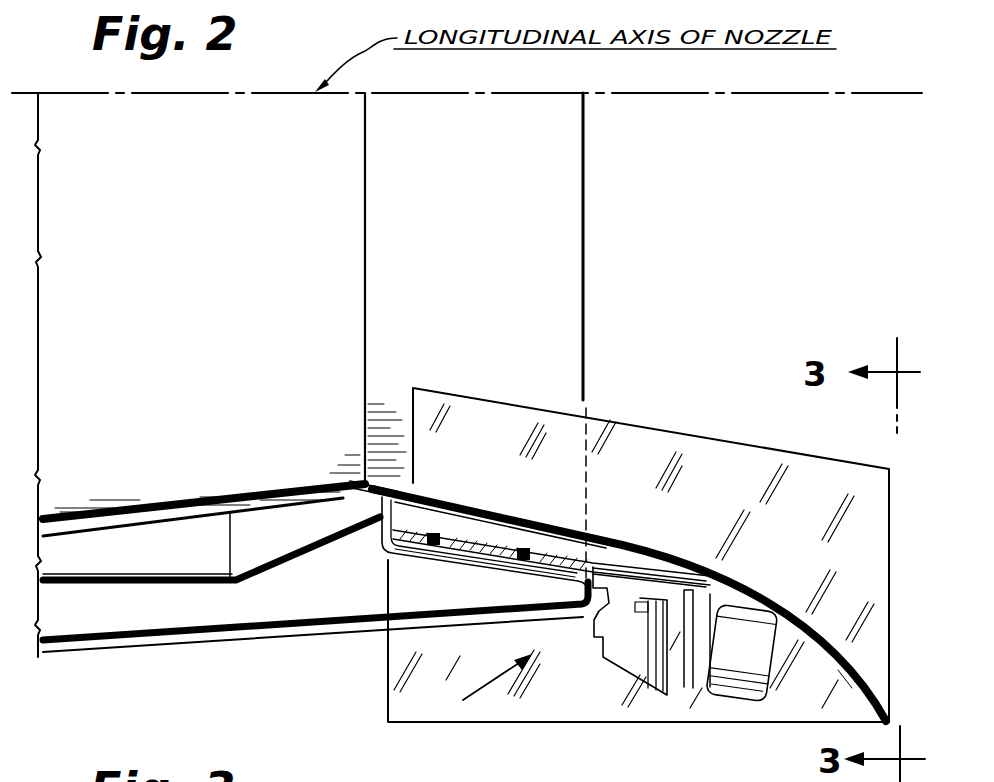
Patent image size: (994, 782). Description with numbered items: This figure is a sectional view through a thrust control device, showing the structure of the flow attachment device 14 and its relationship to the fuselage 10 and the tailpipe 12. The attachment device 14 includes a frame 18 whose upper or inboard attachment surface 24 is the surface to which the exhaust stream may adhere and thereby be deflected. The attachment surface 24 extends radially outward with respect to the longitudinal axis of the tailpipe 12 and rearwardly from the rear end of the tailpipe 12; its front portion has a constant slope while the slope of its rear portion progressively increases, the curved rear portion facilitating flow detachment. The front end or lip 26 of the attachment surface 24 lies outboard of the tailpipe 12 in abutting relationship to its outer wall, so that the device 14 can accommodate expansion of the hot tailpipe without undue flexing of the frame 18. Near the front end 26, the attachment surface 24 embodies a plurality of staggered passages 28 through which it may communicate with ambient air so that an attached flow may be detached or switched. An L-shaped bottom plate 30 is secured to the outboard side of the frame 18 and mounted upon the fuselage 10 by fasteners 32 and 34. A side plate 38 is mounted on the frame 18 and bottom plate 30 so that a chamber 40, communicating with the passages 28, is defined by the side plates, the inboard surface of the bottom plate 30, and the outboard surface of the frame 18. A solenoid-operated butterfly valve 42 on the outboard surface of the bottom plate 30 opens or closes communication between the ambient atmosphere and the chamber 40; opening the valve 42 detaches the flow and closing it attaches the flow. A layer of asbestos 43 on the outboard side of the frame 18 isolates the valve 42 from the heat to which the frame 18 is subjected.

The fuselage 10 is at (198, 640).
The tailpipe 12 is at (206, 497).
The flow attachment device 14 is at (480, 686).
The frame 18 is at (668, 544).
The attachment surface 24 is at (548, 536).
The front end or lip of the attachment surface 26 is at (352, 478).
The passages 28 is at (404, 498).
The L-shaped bottom plate 30 is at (594, 553).
The fastener 32 is at (432, 556).
The fastener 34 is at (523, 568).
The side plate 38 is at (767, 484).
The chamber 40 is at (562, 548).
The solenoid-operated butterfly valve 42 is at (625, 650).
The layer of asbestos 43 is at (840, 674).